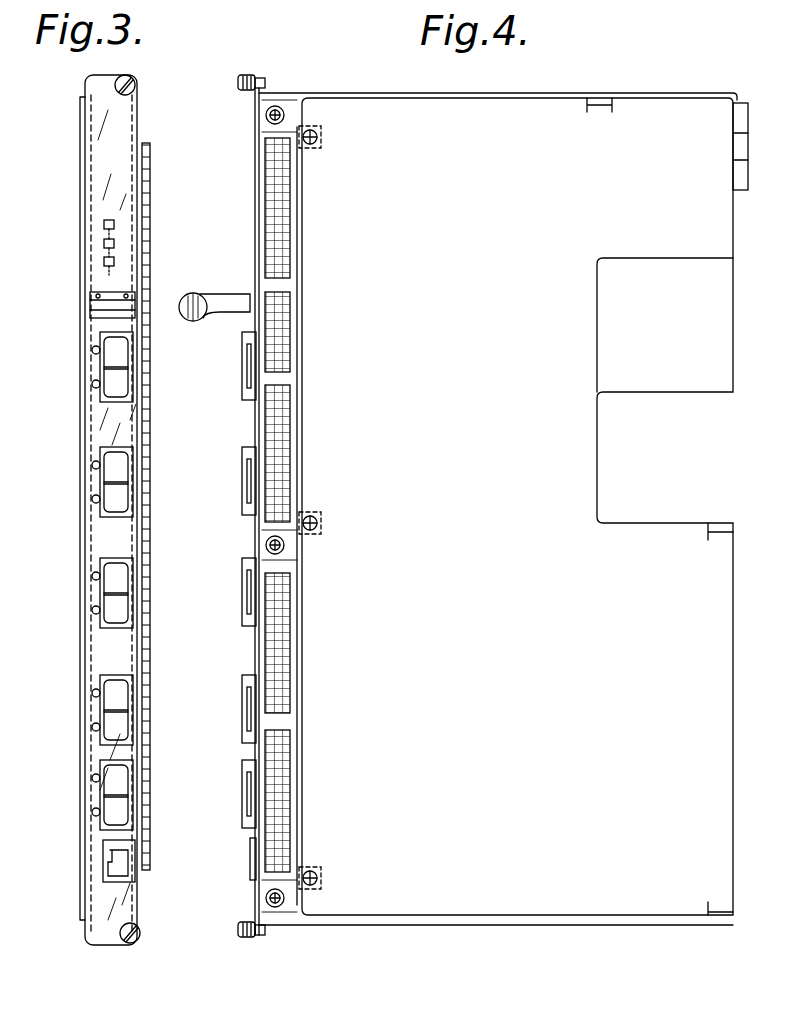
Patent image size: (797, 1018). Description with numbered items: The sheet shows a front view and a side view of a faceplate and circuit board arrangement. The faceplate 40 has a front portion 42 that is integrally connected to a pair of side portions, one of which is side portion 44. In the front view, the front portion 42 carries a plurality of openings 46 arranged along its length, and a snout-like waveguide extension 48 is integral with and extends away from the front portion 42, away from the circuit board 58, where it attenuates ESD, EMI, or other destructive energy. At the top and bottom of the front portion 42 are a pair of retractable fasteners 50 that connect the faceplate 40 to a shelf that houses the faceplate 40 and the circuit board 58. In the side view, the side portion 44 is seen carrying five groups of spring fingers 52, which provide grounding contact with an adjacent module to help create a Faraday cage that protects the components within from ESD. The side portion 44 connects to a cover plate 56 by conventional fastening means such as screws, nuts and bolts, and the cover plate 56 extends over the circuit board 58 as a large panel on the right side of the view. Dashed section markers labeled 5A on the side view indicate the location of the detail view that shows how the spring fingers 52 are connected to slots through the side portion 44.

In FIG. 3, the faceplate 40 is at (82, 91).
In FIG. 3, the front portion 42 is at (100, 131).
In FIG. 4, the side portion 44 is at (270, 531).
In FIG. 3, the openings 46 is at (113, 382).
In FIG. 3, the waveguide extension 48 is at (140, 372).
In FIG. 4, the waveguide extension 48 is at (249, 337).
In FIG. 3, the retractable fasteners 50 is at (136, 86).
In FIG. 4, the retractable fasteners 50 is at (239, 85).
In FIG. 3, the spring fingers 52 is at (150, 203).
In FIG. 4, the spring fingers 52 is at (270, 168).
In FIG. 4, the cover plate 56 is at (672, 548).
In FIG. 4, the circuit board 58 is at (655, 378).
In FIG. 4, the section 5A is at (256, 140).